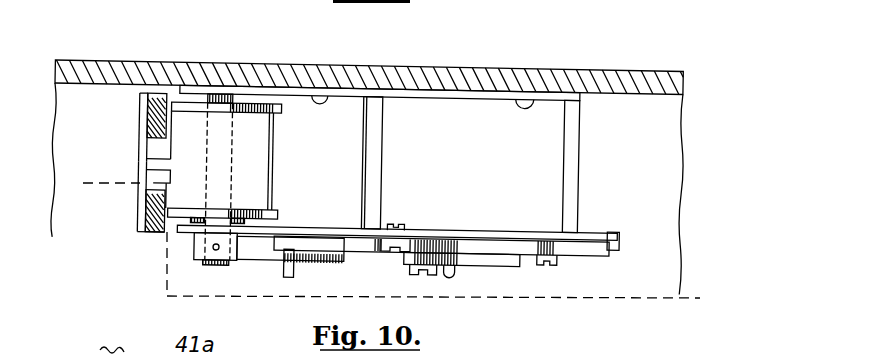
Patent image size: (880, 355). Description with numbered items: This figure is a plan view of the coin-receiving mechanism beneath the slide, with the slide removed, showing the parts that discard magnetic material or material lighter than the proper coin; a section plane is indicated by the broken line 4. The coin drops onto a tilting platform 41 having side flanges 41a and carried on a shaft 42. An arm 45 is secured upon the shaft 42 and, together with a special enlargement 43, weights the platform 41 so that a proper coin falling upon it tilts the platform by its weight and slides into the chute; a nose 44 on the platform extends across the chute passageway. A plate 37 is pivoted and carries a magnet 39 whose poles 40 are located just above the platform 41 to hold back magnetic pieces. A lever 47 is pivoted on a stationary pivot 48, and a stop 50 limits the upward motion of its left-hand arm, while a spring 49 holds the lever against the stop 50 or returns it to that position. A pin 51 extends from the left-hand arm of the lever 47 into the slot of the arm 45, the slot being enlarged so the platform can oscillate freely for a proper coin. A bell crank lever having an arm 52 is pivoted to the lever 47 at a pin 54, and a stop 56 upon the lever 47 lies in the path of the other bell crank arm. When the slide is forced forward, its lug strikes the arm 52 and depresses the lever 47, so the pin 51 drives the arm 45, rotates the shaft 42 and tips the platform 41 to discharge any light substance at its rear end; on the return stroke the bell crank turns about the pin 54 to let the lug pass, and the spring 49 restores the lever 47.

The section line 4- 4 is at (389, 238).
The plate 37 is at (142, 208).
The magnet 39 is at (140, 111).
The poles 40 is at (142, 138).
The tilting platform 41 is at (224, 182).
The side flanges 41a is at (276, 111).
The shaft 42 is at (220, 257).
The enlargement 43 is at (265, 179).
The nose 44 is at (154, 164).
The arm 45 is at (263, 254).
The lever 47 is at (370, 244).
The stationary pivot 48 is at (563, 254).
The spring 49 is at (625, 225).
The stop 50 is at (396, 226).
The pin 51 is at (292, 274).
The bell crank lever arm 52 is at (503, 254).
The pivot pin 54 is at (436, 265).
The stop 56 is at (456, 265).